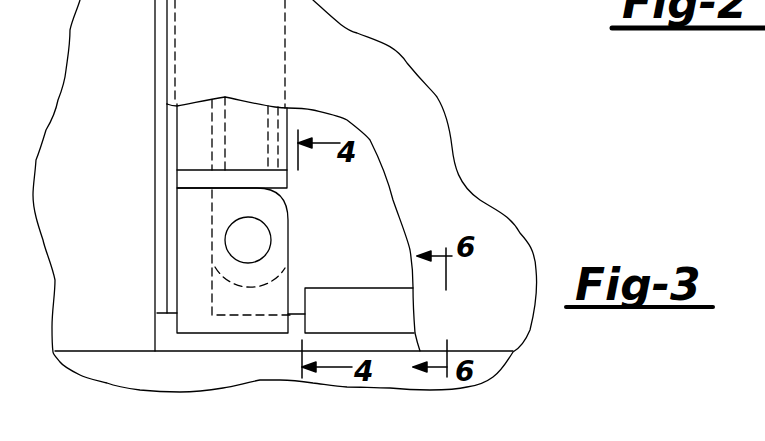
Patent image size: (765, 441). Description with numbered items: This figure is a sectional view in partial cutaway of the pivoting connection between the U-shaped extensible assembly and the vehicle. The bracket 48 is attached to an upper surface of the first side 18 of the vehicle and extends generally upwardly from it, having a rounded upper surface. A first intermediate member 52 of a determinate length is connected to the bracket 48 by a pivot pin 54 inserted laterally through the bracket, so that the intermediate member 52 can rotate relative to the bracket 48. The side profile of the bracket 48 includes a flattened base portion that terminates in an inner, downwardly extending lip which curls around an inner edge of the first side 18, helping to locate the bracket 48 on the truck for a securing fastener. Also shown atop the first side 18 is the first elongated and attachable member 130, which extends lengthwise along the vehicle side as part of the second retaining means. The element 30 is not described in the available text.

The first side 18 is at (182, 343).
The housing member 30 is at (394, 78).
The bracket 48 is at (273, 284).
The first intermediate member 52 is at (190, 150).
The pivot pin 54 is at (234, 239).
The first elongated and attachable member 130 is at (396, 310).